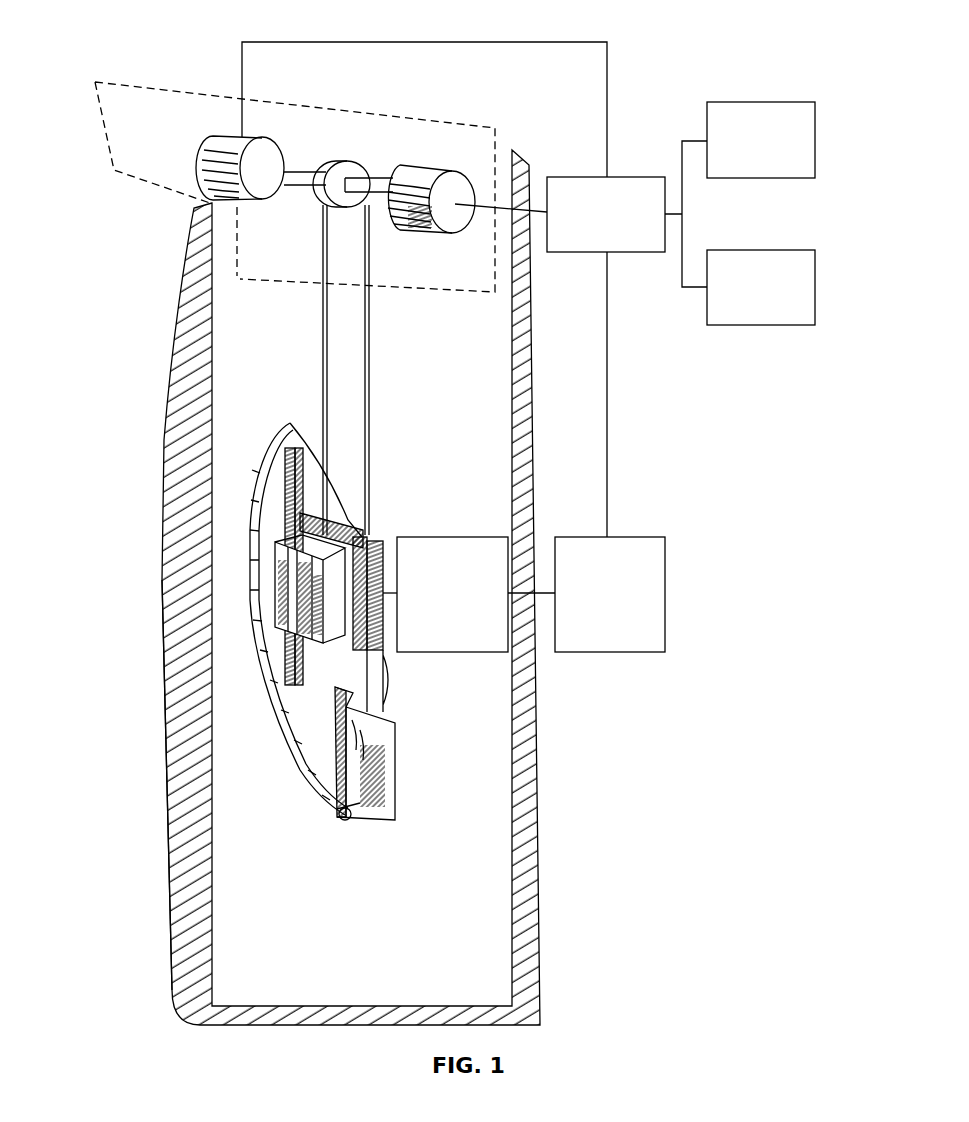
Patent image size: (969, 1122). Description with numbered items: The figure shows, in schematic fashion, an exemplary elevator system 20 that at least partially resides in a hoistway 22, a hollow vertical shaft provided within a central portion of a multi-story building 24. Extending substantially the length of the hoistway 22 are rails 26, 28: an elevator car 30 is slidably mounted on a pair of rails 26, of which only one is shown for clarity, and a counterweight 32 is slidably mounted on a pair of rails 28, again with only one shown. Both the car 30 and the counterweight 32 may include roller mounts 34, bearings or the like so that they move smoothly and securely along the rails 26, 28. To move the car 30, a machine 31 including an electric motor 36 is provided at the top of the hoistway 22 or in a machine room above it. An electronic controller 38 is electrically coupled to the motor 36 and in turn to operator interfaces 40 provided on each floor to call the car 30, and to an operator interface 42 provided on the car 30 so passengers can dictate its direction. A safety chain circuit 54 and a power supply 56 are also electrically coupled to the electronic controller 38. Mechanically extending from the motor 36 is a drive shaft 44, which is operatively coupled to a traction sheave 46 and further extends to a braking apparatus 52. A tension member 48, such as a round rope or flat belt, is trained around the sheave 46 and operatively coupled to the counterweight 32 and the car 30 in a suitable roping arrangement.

The elevator system 20 is at (740, 52).
The hoistway 22 is at (233, 305).
The multi-story building 24 is at (198, 647).
The rail 26 is at (290, 447).
The rail 28 is at (345, 818).
The elevator car 30 is at (382, 643).
The machine 31 is at (122, 66).
The counterweight 32 is at (395, 750).
The roller mounts 34 is at (273, 672).
The electric motor 36 is at (443, 234).
The electronic controller 38 is at (626, 252).
The operator interface 40 is at (640, 537).
The operator interface 42 is at (432, 537).
The drive shaft 44 is at (390, 222).
The traction sheave 46 is at (323, 191).
The tension member 48 is at (372, 335).
The braking apparatus 52 is at (205, 143).
The safety chain circuit 54 is at (790, 325).
The power supply 56 is at (786, 178).